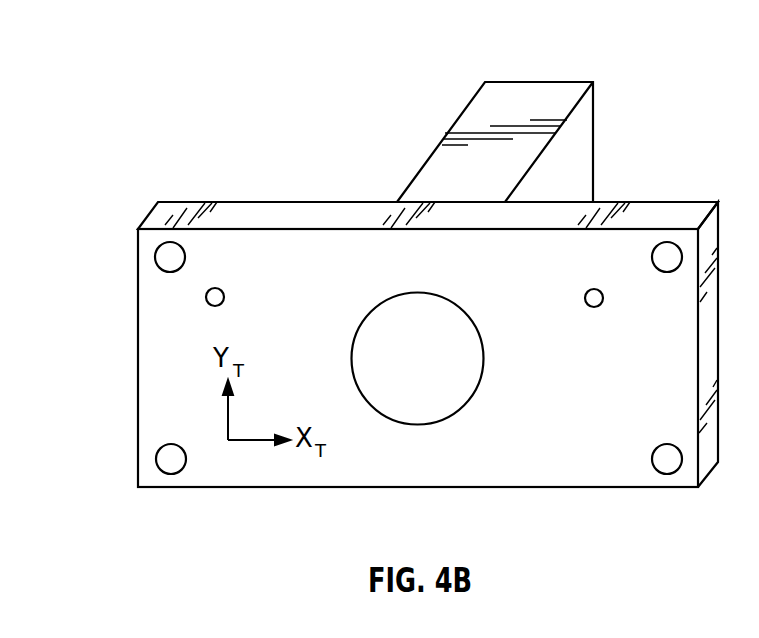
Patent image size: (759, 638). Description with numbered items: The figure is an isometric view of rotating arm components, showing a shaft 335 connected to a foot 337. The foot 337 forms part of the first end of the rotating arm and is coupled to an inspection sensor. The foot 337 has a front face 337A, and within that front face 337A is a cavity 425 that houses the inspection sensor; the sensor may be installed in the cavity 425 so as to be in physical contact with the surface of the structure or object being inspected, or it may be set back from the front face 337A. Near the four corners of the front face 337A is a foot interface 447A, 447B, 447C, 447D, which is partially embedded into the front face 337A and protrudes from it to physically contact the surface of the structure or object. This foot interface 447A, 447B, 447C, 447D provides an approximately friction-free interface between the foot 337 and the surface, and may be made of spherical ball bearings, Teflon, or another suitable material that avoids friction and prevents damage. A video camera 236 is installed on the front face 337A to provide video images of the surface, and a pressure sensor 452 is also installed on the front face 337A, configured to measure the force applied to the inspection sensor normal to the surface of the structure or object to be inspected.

The shaft 335 is at (538, 92).
The foot 337 is at (682, 215).
The front face 337A is at (537, 463).
The foot interface 447A is at (167, 258).
The foot interface 447B is at (168, 460).
The foot interface 447C is at (668, 262).
The foot interface 447D is at (670, 460).
The pressure sensor 452 is at (213, 297).
The video camera 236 is at (593, 300).
The cavity 425 is at (383, 417).